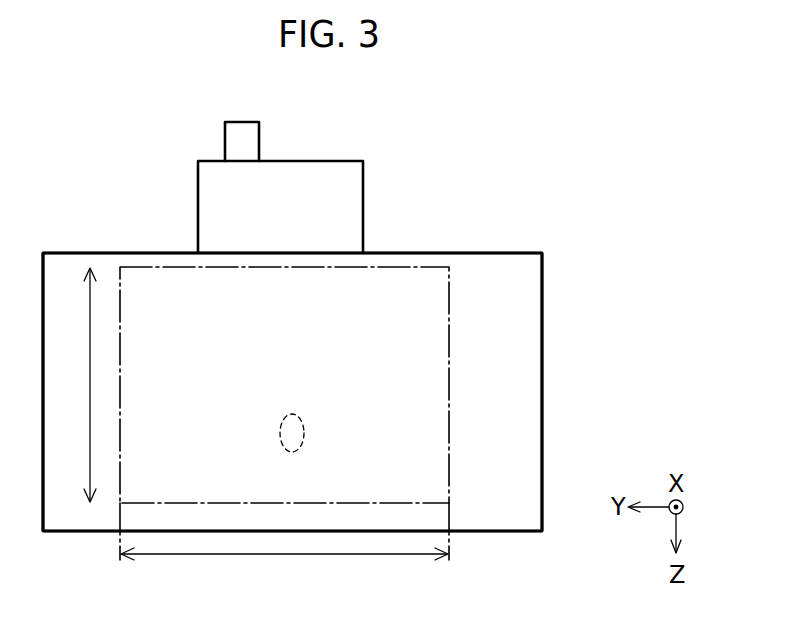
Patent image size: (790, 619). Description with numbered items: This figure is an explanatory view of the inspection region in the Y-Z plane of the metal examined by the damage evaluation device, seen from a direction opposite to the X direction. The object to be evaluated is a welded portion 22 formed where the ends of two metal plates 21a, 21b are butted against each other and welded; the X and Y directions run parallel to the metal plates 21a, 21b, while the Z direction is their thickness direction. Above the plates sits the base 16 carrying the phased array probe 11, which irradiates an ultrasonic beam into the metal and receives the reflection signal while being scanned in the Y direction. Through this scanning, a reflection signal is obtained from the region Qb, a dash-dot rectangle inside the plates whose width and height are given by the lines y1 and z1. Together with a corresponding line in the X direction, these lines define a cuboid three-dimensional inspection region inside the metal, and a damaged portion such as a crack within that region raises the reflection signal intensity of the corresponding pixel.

The phased array probe 11 is at (255, 136).
The base 16 is at (356, 213).
The metal plate 21a is at (531, 342).
The metal plate 21b is at (292, 392).
The welded portion 22 is at (292, 392).
The region Qb is at (450, 298).
The line z1 is at (78, 385).
The line y1 is at (284, 567).